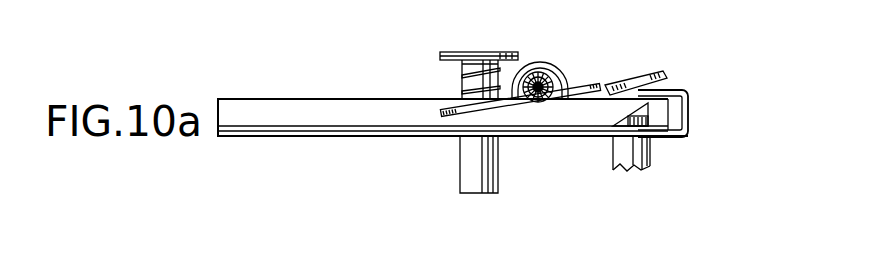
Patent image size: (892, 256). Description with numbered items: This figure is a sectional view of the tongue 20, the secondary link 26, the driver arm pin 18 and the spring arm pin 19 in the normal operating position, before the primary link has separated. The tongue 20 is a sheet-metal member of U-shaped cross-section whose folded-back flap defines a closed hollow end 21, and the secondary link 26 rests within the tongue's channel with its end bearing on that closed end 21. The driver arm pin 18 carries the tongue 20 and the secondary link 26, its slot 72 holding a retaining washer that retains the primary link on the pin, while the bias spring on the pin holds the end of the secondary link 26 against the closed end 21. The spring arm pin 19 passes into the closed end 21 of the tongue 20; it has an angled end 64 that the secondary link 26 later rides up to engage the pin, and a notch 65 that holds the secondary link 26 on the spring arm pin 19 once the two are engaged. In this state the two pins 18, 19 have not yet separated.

The tongue 20 is at (378, 137).
The slot 72 is at (458, 78).
The secondary link 26 is at (570, 88).
The angled end 64 is at (632, 90).
The closed end 21 is at (690, 103).
The notch 65 is at (650, 107).
The driver arm pin 18 is at (498, 180).
The spring arm pin 19 is at (652, 165).